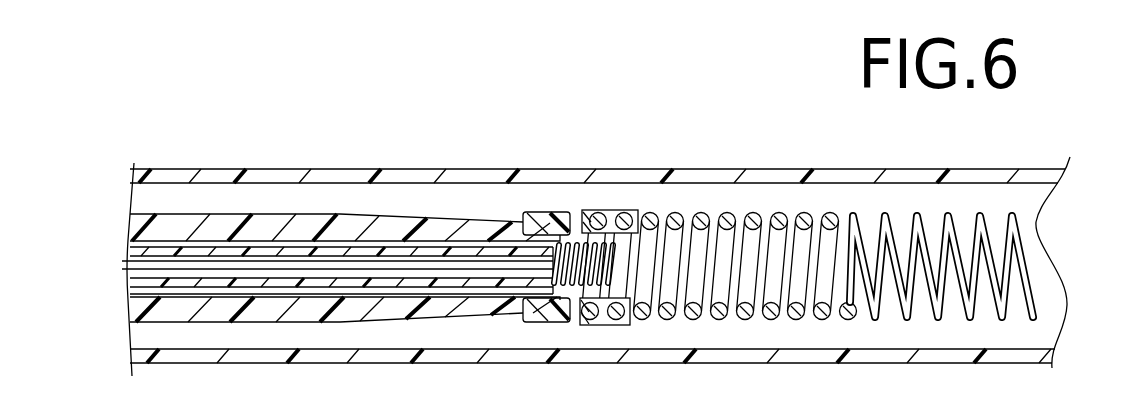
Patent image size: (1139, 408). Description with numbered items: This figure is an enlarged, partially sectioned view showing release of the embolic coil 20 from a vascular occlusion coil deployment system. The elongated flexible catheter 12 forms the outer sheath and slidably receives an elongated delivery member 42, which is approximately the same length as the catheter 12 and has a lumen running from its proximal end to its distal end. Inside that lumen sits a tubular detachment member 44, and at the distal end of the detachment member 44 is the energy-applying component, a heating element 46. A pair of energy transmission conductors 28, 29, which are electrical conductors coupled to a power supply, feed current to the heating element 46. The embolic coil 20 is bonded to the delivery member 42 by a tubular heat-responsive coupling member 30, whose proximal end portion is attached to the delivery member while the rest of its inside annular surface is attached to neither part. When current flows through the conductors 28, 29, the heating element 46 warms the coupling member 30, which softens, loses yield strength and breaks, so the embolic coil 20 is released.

The catheter 12 is at (951, 167).
The embolic coil 20 is at (1013, 243).
The energy transmission conductor 28 is at (123, 261).
The energy transmission conductor 29 is at (123, 270).
The heat-responsive coupling member 30 is at (617, 220).
The elongated delivery member 42 is at (363, 230).
The tubular detachment member 44 is at (425, 293).
The heating element 46 is at (585, 287).